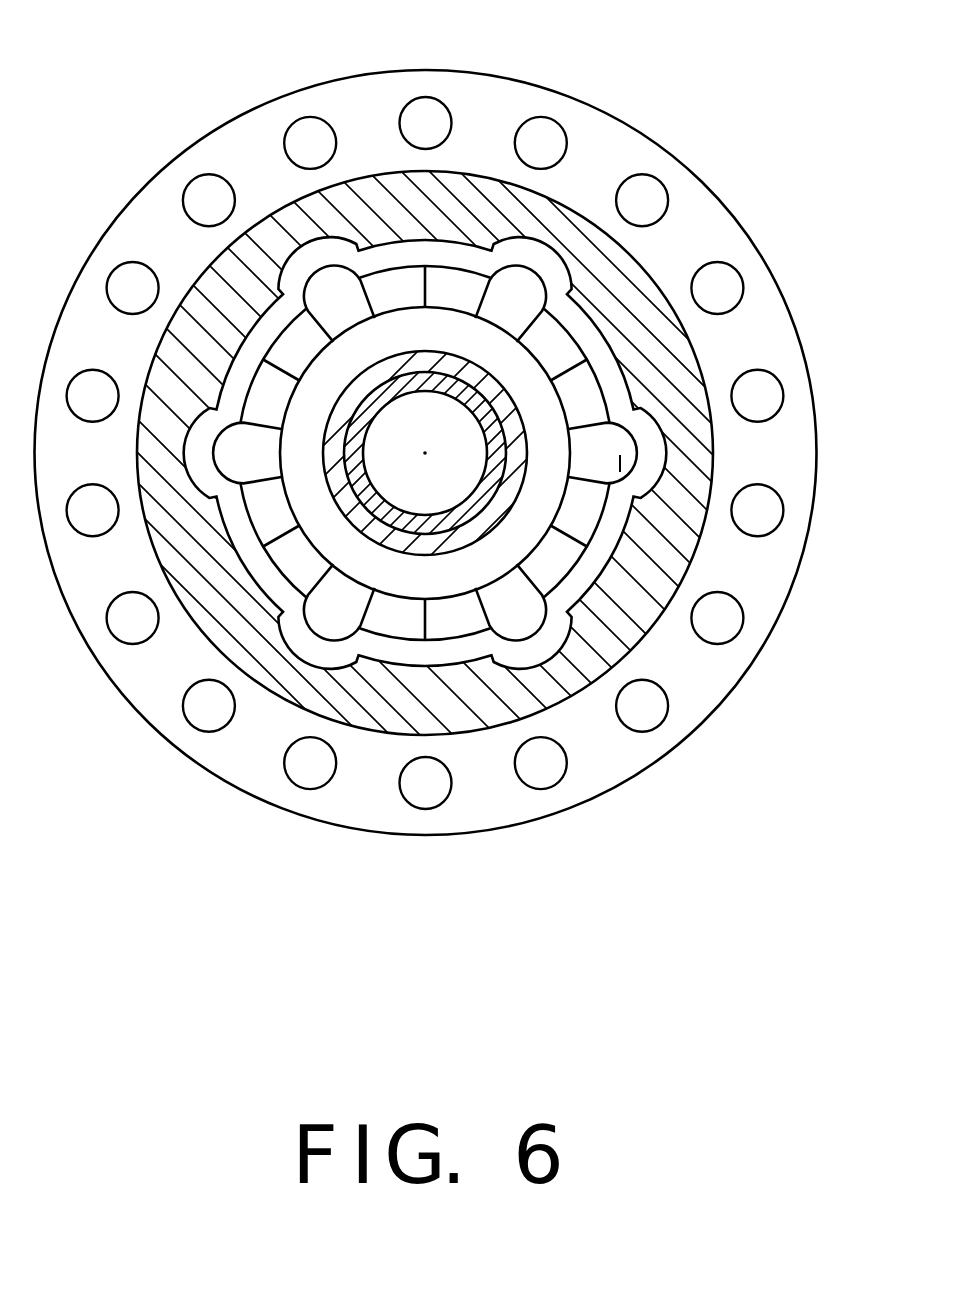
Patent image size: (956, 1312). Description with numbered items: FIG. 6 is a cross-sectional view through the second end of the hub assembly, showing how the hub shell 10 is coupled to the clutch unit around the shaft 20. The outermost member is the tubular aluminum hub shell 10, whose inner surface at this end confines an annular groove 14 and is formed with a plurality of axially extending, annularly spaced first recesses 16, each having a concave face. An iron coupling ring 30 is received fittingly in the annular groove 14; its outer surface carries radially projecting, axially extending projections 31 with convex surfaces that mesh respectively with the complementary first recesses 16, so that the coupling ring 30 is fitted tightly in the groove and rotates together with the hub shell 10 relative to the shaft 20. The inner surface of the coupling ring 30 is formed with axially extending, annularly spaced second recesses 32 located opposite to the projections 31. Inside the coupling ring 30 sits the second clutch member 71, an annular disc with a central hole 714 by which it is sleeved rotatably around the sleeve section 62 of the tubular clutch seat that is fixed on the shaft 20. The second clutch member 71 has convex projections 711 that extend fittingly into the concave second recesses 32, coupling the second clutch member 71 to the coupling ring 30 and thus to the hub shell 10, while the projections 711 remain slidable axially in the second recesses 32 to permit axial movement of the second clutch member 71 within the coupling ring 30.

The hub shell 10 is at (648, 250).
The annular groove 14 is at (612, 357).
The first recesses 16 is at (653, 418).
The shaft 20 is at (434, 372).
The coupling ring 30 is at (590, 578).
The projections 31 is at (657, 456).
The second recesses 32 is at (617, 480).
The sleeve section 62 is at (470, 373).
The second clutch member 71 is at (441, 588).
The projections 711 is at (633, 508).
The central hole 714 is at (487, 550).